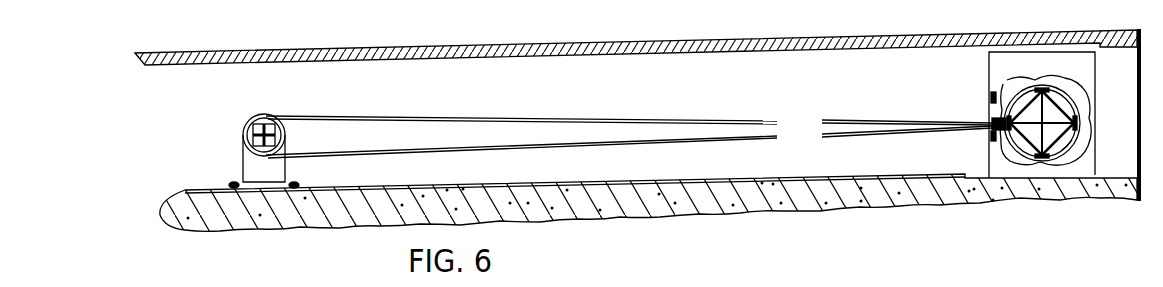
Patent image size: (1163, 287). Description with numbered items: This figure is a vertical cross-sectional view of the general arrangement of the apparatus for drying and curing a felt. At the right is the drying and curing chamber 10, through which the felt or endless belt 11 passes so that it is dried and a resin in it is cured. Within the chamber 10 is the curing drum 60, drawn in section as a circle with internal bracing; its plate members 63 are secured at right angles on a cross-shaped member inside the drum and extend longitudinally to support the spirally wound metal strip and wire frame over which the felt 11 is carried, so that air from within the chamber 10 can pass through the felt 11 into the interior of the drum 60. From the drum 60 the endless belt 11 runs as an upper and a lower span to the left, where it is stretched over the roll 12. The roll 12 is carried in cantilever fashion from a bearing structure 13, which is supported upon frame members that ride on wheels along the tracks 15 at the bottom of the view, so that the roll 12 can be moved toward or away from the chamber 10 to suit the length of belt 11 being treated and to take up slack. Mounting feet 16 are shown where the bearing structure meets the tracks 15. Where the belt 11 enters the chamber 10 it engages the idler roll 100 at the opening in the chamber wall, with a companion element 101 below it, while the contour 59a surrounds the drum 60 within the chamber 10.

The drying and curing chamber 10 is at (988, 63).
The endless belt 11 is at (450, 117).
The roll 12 is at (288, 135).
The bearing structure 13 is at (243, 140).
The tracks 15 is at (185, 191).
The mounting feet 16 is at (233, 184).
The insulation 59a is at (1007, 80).
The curing drum 60 is at (1071, 100).
The plate members 63 is at (1065, 148).
The idler roll 100 is at (991, 113).
The lower clamp 101 is at (991, 137).